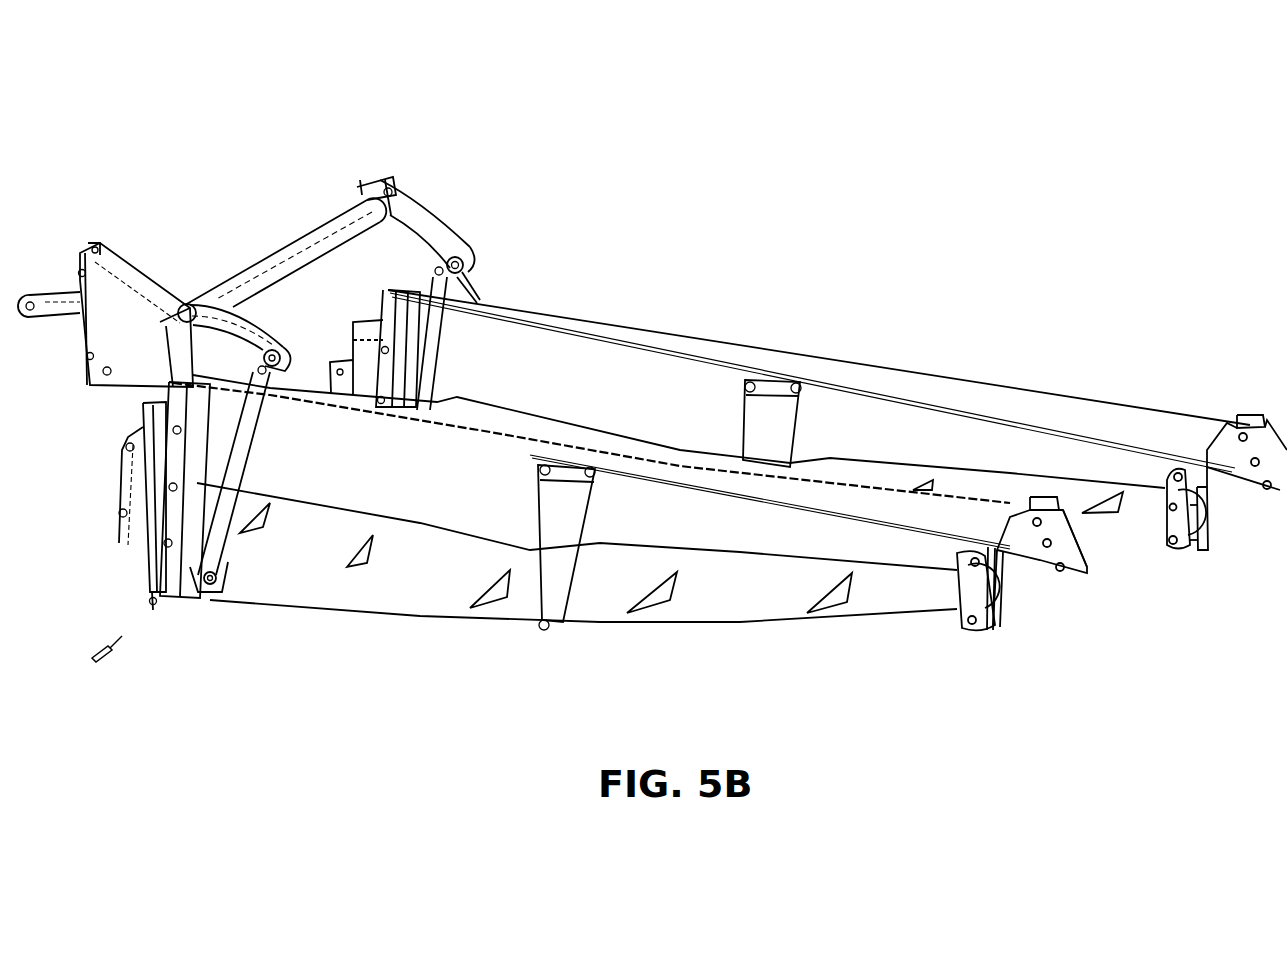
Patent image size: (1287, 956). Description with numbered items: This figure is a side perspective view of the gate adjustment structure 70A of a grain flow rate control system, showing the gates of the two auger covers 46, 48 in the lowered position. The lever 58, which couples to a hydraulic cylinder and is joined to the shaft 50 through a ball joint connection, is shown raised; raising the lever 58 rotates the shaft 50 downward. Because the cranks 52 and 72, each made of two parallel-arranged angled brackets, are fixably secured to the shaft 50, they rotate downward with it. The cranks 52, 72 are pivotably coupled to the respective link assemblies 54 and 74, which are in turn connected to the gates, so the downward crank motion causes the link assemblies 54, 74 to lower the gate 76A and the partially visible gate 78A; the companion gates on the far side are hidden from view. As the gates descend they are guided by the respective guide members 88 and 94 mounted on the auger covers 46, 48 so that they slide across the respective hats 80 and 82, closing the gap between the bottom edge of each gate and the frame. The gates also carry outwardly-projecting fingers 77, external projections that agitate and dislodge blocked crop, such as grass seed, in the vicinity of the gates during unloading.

The gate adjustment structure 70A is at (1025, 114).
The auger cover 46 is at (900, 613).
The auger cover 48 is at (880, 370).
The shaft 50 is at (298, 236).
The crank 52 is at (248, 320).
The link assembly 54 is at (298, 308).
The lever 58 is at (44, 293).
The crank 72 is at (440, 214).
The link assembly 74 is at (492, 259).
The gate 76A is at (290, 570).
The outwardly-projecting fingers 77 is at (490, 593).
The gate 78A is at (460, 398).
The hat 80 is at (1065, 572).
The hat 82 is at (1200, 547).
The guide member 88 is at (570, 533).
The guide member 94 is at (779, 431).